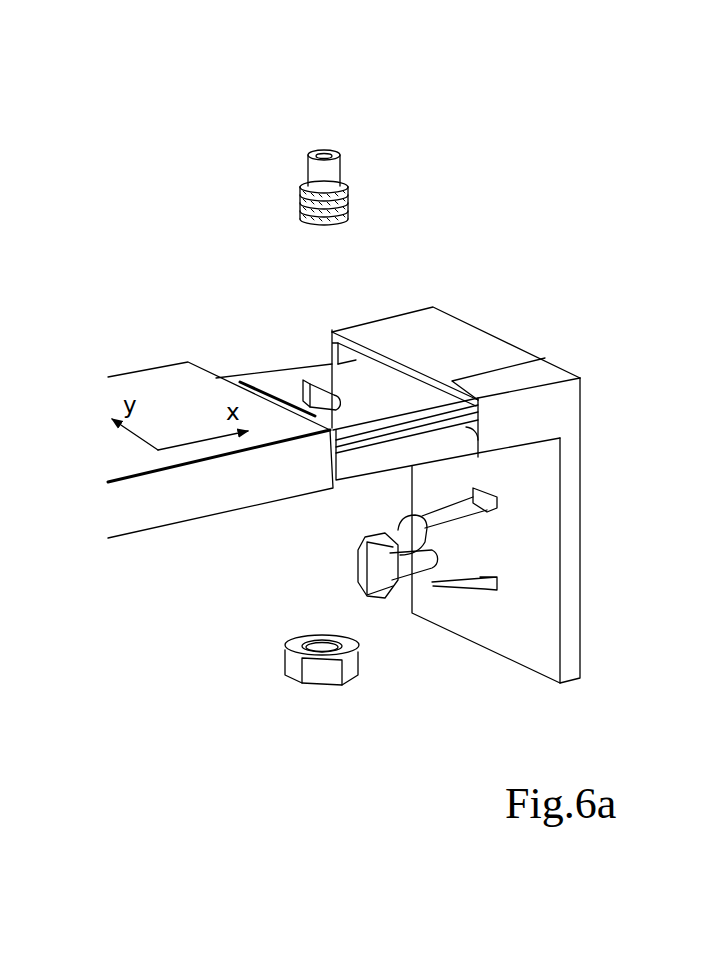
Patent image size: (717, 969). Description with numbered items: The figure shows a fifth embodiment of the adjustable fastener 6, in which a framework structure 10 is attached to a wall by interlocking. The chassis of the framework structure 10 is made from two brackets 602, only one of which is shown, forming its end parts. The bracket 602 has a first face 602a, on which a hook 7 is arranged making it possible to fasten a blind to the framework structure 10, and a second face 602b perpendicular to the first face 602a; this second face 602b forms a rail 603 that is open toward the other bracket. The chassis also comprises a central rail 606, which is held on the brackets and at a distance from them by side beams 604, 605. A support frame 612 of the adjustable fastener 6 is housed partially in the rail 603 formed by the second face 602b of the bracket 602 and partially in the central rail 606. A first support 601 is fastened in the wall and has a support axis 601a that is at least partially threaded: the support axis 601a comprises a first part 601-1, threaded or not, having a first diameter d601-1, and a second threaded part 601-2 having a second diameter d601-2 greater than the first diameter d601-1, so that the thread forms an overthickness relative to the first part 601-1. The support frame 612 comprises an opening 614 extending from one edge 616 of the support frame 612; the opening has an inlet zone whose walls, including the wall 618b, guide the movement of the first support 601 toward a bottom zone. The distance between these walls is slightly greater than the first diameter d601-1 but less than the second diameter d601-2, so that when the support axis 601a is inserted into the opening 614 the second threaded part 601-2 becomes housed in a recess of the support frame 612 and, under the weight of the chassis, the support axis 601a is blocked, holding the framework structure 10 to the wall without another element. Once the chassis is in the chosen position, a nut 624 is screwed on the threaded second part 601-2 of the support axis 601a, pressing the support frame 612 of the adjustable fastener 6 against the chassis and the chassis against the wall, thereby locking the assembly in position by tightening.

The first support 601 is at (308, 162).
The first part of the support axis 601-1 is at (315, 175).
The second threaded part of the support axis 601-2 is at (310, 220).
The support axis 601a is at (324, 131).
The first diameter d601-1 is at (265, 165).
The second diameter d601-2 is at (255, 213).
The central rail 606 is at (188, 497).
The side beam 604 is at (260, 385).
The opening 614 is at (292, 388).
The edge of the support frame 616 is at (341, 367).
The wall of the inlet zone 618b is at (312, 390).
The rail 603 is at (328, 330).
The support frame 612 is at (547, 357).
The side beam 605 is at (445, 448).
The bracket 602 is at (560, 491).
The first face of the bracket 602a is at (568, 490).
The second face of the bracket 602b is at (512, 413).
The framework structure 10 is at (461, 298).
The hook 7 is at (443, 568).
The adjustable fastener 6 is at (299, 526).
The nut 624 is at (314, 674).